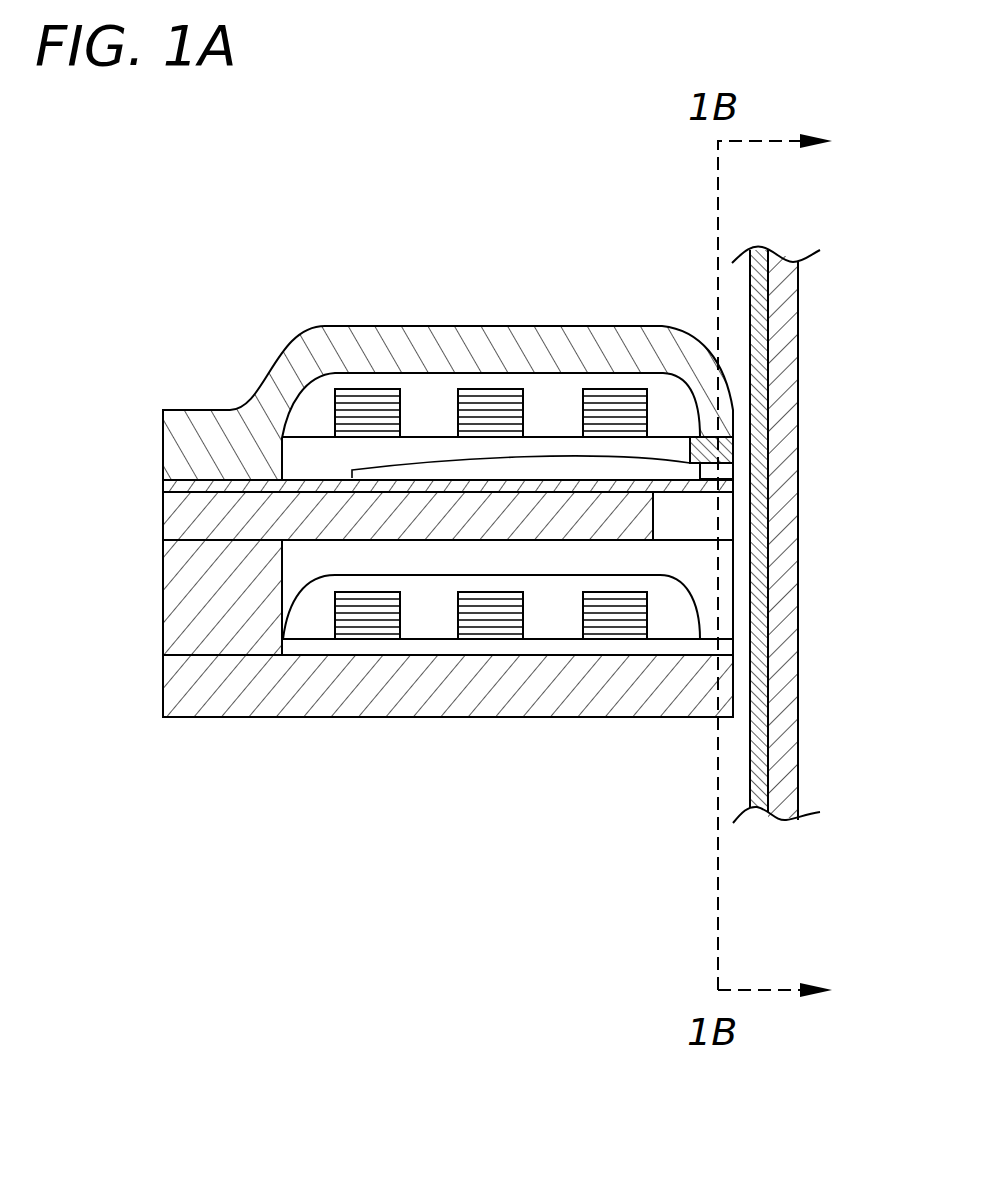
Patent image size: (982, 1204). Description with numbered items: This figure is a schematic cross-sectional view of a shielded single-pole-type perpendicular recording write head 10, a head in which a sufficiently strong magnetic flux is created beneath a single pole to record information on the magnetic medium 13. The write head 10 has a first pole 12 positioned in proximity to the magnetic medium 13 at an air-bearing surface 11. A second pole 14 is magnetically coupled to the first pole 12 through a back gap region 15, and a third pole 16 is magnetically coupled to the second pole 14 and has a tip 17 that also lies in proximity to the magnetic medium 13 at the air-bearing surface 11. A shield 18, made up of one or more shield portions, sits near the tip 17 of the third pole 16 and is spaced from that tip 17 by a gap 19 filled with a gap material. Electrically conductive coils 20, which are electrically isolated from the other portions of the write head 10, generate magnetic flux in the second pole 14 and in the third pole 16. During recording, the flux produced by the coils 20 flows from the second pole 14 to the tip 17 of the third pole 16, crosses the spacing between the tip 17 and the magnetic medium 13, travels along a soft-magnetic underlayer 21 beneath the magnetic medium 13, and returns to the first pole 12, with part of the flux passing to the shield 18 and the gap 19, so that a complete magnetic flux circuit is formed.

The write head 10 is at (188, 222).
The air-bearing surface 11 is at (735, 688).
The first pole 12 is at (670, 688).
The magnetic medium 13 is at (753, 810).
The second pole 14 is at (181, 521).
The back gap region 15 is at (181, 611).
The third pole 16 is at (181, 487).
The tip 17 is at (750, 487).
The shield 18 is at (700, 437).
The gap 19 is at (723, 473).
The electrically conductive coils 20 is at (378, 405).
The soft-magnetic underlayer 21 is at (782, 806).